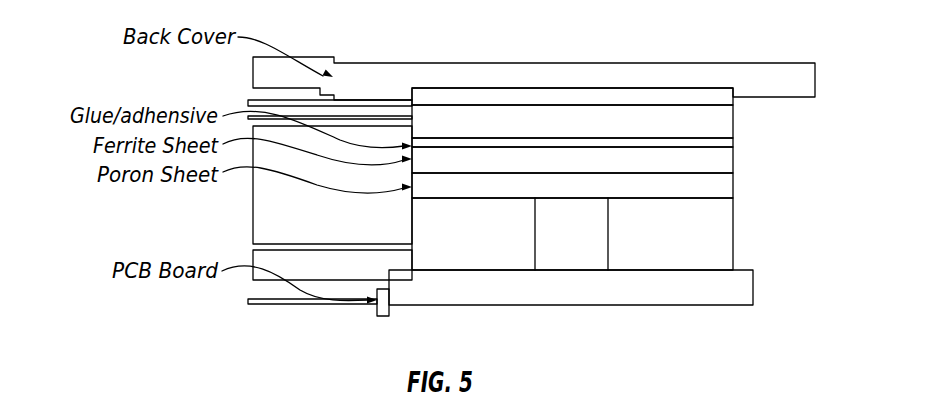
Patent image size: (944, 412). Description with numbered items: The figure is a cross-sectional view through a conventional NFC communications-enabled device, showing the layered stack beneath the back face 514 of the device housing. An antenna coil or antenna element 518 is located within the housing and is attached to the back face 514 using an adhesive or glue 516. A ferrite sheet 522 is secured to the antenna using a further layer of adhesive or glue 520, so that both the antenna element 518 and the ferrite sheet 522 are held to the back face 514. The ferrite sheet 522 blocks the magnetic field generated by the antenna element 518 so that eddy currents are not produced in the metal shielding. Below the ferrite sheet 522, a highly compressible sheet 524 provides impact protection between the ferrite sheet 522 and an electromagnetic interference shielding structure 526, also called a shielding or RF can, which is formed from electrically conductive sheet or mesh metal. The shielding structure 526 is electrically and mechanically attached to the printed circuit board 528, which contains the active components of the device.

The back face 514 is at (761, 78).
The adhesive or glue 516 is at (718, 98).
The antenna element 518 is at (722, 117).
The adhesive or glue 520 is at (722, 143).
The ferrite sheet 522 is at (722, 165).
The highly compressible sheet 524 is at (722, 189).
The electromagnetic interference shielding structure 526 is at (722, 223).
The printed circuit board 528 is at (737, 287).